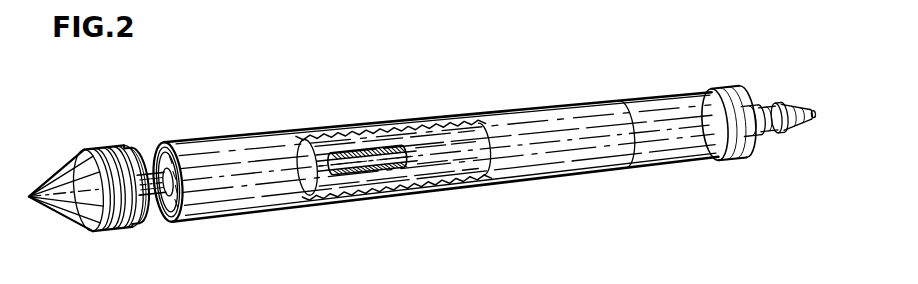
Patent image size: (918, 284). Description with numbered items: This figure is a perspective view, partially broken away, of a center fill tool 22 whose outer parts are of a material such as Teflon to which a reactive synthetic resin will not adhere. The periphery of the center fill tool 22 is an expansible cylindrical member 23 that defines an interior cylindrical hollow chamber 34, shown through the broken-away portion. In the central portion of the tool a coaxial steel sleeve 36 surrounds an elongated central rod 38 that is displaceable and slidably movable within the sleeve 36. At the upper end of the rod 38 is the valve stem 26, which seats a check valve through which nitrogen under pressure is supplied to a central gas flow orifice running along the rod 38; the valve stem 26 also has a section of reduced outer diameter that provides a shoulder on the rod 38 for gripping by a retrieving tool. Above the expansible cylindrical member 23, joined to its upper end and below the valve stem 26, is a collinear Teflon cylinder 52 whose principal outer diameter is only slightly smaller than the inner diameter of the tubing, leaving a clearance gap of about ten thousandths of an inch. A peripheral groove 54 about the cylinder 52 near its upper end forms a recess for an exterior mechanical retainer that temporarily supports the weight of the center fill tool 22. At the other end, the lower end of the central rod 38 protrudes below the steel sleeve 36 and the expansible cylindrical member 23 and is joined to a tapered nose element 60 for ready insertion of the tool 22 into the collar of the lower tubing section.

The center fill tool 22 is at (540, 96).
The expansible cylindrical member 23 is at (407, 130).
The valve stem 26 is at (793, 96).
The interior cylindrical hollow chamber 34 is at (460, 130).
The coaxial steel sleeve 36 is at (345, 137).
The central rod 38 is at (151, 197).
The Teflon cylinder 52 is at (638, 95).
The peripheral groove 54 is at (715, 85).
The nose element 60 is at (71, 150).